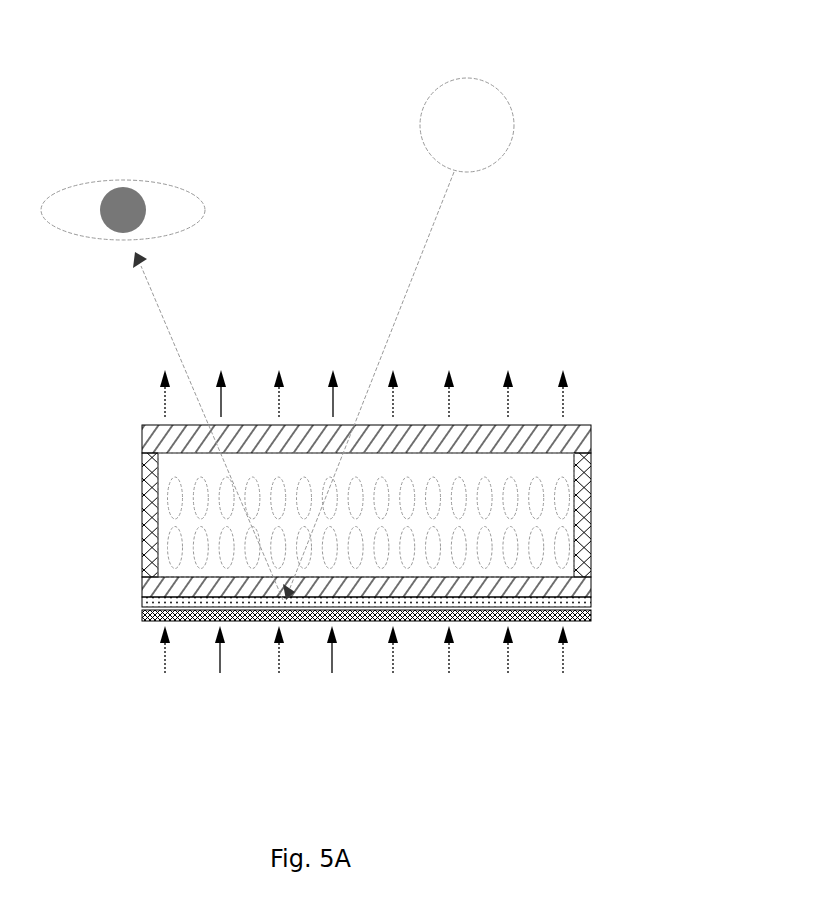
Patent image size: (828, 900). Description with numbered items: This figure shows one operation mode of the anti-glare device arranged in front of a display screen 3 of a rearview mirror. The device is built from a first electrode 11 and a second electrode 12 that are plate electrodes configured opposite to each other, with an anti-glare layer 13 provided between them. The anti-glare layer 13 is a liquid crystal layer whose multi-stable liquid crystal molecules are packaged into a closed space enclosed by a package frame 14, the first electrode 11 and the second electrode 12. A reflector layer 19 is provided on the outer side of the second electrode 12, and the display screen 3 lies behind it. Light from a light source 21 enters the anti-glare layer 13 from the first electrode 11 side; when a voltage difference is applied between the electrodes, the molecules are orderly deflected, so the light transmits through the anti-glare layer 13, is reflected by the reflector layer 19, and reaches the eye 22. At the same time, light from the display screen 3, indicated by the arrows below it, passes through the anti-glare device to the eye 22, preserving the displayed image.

The first electrode 11 is at (572, 438).
The anti-glare layer 13 is at (559, 473).
The package frame 14 is at (591, 527).
The second electrode 12 is at (588, 594).
The reflector layer 19 is at (588, 603).
The display screen 3 is at (588, 613).
The light source 21 is at (483, 80).
The eye 22 is at (180, 187).